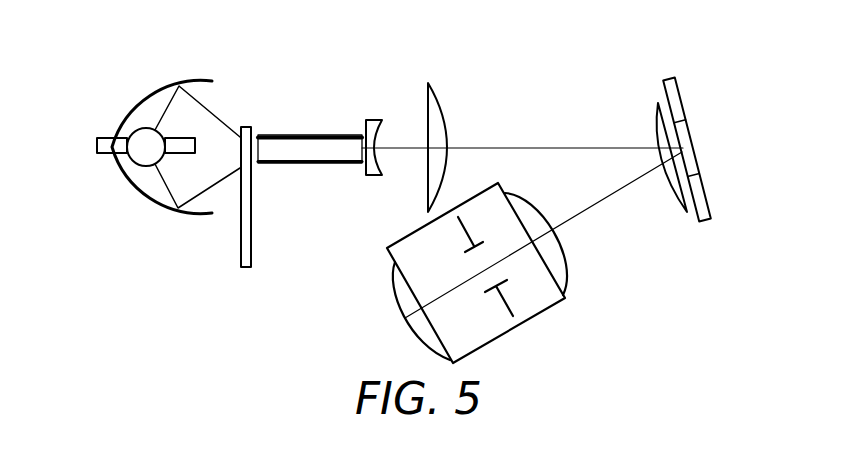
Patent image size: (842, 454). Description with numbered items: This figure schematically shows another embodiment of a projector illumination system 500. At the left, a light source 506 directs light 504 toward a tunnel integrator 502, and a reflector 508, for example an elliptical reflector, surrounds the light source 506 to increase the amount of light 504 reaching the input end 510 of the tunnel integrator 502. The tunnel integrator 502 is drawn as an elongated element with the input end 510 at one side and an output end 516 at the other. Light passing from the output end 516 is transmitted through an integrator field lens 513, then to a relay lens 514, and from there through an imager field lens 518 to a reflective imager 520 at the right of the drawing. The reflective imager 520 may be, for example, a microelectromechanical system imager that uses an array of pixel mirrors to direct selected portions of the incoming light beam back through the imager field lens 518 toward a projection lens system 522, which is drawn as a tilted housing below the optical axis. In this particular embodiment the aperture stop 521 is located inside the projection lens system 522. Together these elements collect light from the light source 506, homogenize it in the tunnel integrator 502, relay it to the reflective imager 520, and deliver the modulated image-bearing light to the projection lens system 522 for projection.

The projector illumination system 500 is at (736, 96).
The tunnel integrator 502 is at (297, 135).
The light 504 is at (212, 190).
The light source 506 is at (97, 142).
The reflector 508 is at (153, 90).
The input end 510 is at (258, 165).
The integrator field lens 513 is at (372, 120).
The relay lens 514 is at (430, 83).
The output end 516 is at (360, 167).
The imager field lens 518 is at (658, 103).
The reflective imager 520 is at (682, 97).
The aperture stop 521 is at (503, 312).
The projection lens system 522 is at (557, 302).